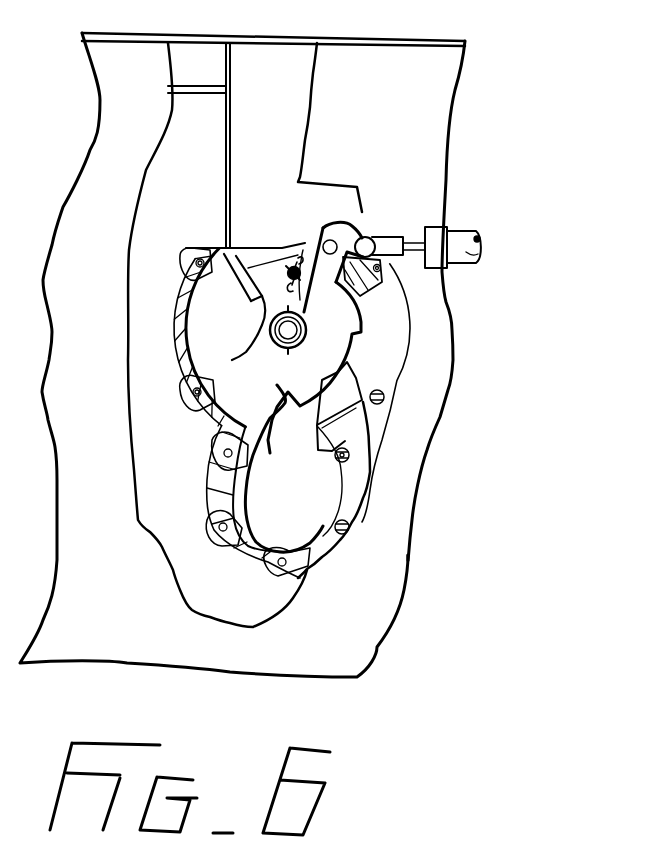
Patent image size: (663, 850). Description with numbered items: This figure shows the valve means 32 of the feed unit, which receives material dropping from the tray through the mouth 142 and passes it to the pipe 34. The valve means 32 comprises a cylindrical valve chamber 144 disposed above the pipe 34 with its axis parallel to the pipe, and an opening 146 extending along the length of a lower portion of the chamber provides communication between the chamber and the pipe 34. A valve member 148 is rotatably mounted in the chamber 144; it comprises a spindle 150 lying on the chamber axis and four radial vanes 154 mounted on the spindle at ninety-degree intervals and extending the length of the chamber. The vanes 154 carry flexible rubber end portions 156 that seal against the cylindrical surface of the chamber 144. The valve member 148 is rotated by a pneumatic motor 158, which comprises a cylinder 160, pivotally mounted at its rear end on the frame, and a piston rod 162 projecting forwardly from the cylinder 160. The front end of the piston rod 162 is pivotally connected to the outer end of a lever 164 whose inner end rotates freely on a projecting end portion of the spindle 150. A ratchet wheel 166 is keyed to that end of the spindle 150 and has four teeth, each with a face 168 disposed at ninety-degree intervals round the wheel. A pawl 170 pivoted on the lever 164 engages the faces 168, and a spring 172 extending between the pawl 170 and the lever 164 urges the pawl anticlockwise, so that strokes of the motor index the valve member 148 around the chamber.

The valve means 32 is at (170, 297).
The pipe 34 is at (212, 487).
The mouth 142 is at (246, 86).
The cylindrical valve chamber 144 is at (188, 317).
The opening 146 is at (217, 440).
The valve member 148 is at (264, 324).
The spindle 150 is at (300, 342).
The radial vanes 154 is at (235, 248).
The flexible rubber end portions 156 is at (197, 250).
The pneumatic motor 158 is at (460, 216).
The cylinder 160 is at (457, 258).
The piston rod 162 is at (413, 241).
The lever 164 is at (346, 226).
The ratchet wheel 166 is at (343, 420).
The face 168 is at (303, 240).
The pawl 170 is at (315, 240).
The spring 172 is at (291, 264).